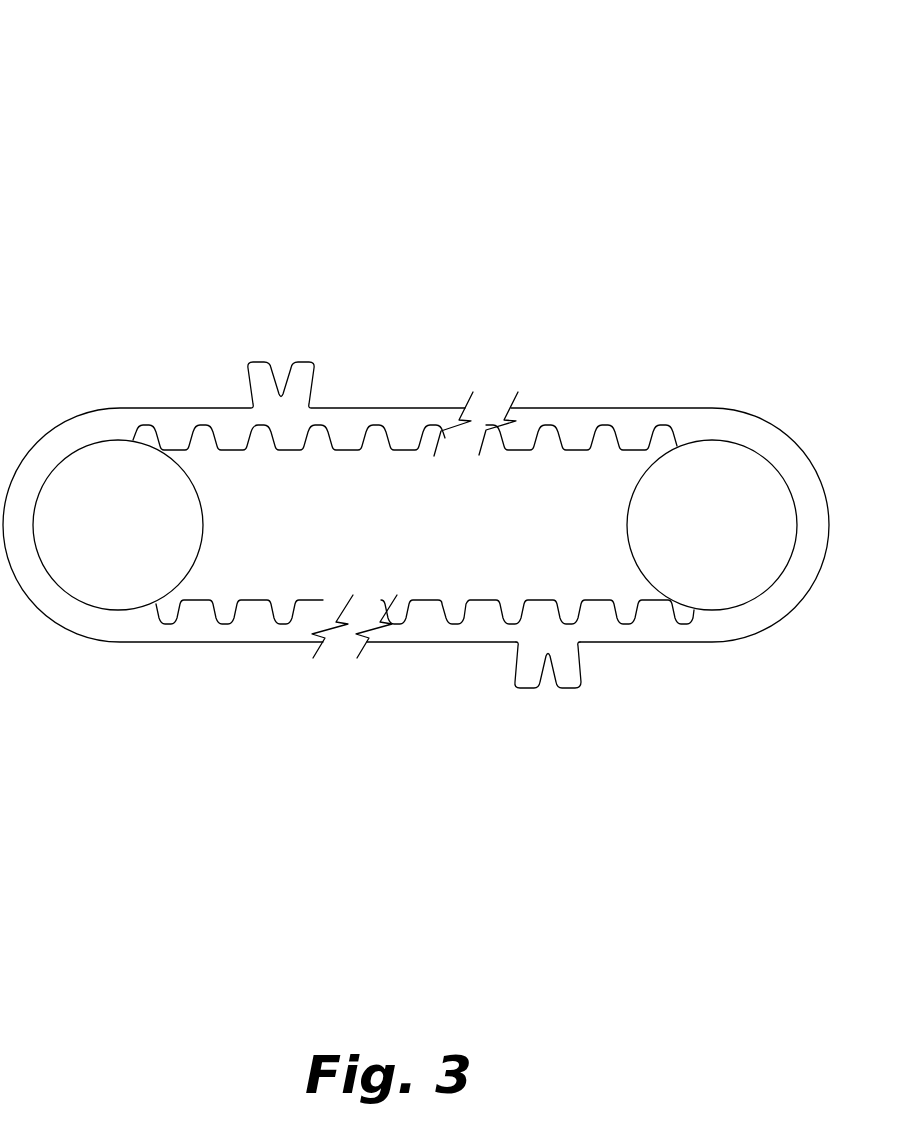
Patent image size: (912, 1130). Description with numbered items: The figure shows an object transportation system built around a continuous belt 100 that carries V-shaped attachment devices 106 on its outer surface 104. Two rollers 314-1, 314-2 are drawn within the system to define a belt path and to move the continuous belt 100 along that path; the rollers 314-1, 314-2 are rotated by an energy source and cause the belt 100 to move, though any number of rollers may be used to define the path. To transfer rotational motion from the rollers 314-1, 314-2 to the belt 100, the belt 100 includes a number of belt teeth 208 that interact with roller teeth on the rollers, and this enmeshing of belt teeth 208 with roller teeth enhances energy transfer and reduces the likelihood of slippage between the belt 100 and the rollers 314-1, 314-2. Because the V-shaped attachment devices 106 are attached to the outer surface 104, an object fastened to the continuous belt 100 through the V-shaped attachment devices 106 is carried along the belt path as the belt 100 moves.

The continuous belt 100 is at (166, 95).
The outer surface 104 is at (603, 406).
The V-shaped attachment devices 106 is at (578, 663).
The belt teeth 208 is at (250, 613).
The roller 314-1 is at (98, 483).
The roller 314-2 is at (743, 480).